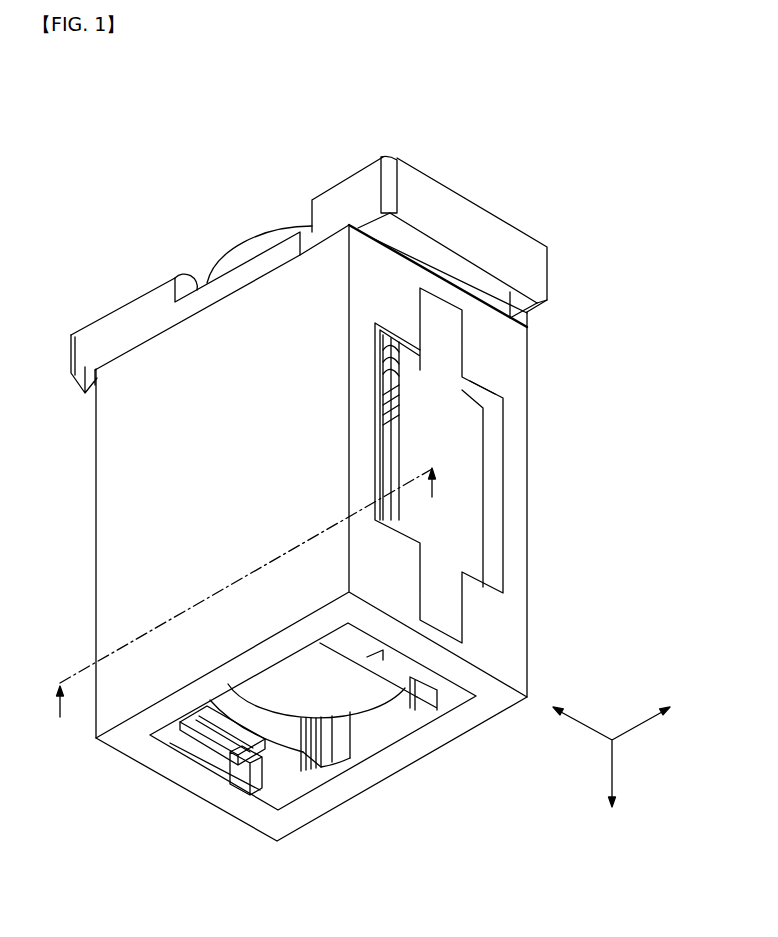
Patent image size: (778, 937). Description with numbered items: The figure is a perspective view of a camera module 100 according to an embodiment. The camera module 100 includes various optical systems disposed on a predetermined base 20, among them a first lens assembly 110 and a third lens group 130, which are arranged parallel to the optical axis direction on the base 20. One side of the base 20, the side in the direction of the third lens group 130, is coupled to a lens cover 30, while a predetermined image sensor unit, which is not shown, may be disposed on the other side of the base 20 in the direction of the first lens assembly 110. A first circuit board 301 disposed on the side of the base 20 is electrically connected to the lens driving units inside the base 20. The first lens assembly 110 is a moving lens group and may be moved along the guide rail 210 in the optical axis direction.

The camera module 100 is at (97, 151).
The base 20 is at (102, 512).
The lens cover 30 is at (127, 296).
The third lens group 130 is at (233, 238).
The first circuit board 301 is at (460, 425).
The first lens assembly 110 is at (372, 702).
The guide rail 210 is at (300, 794).